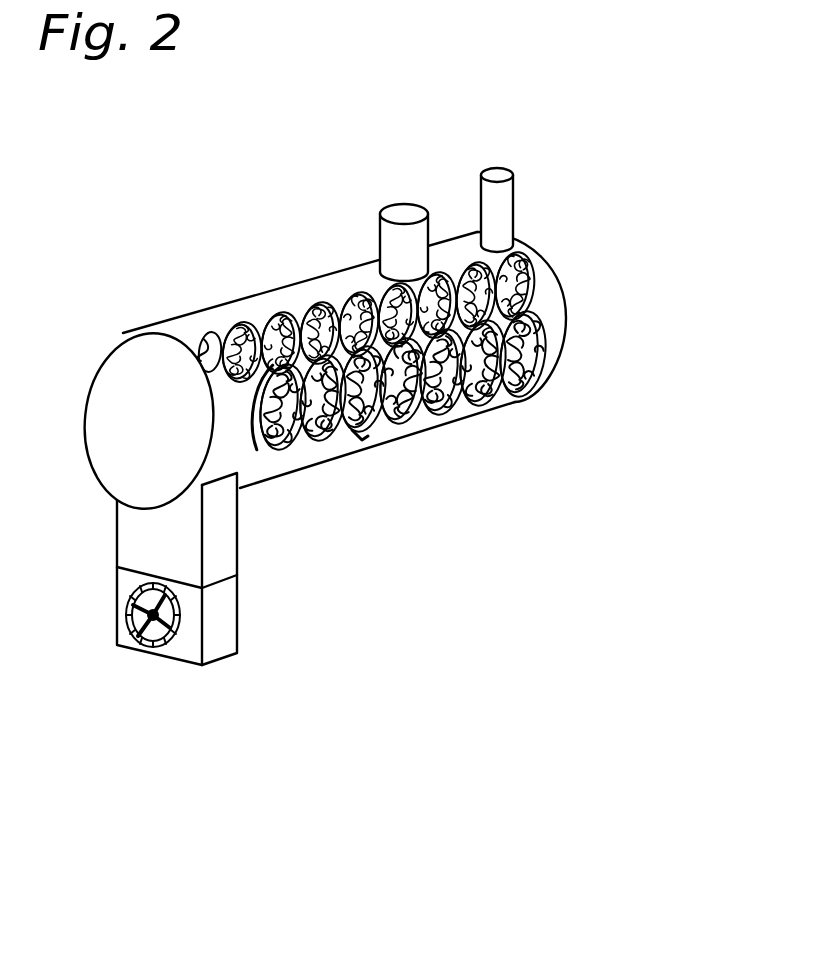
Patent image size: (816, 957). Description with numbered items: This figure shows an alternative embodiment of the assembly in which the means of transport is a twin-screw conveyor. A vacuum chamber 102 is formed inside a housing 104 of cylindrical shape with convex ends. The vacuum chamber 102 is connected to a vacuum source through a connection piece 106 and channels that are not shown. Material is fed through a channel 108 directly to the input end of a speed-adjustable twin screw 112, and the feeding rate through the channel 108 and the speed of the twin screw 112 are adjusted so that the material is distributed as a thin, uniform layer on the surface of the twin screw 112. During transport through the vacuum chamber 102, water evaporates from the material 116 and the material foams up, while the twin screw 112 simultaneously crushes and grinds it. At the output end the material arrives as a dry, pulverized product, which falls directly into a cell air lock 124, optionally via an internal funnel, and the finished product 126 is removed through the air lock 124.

The vacuum chamber 102 is at (425, 289).
The housing 104 is at (567, 305).
The connection piece 106 is at (405, 197).
The channel 108 is at (497, 158).
The twin screw 112 is at (490, 397).
The material 116 is at (363, 440).
The cell air lock 124 is at (233, 634).
The finished product 126 is at (182, 672).